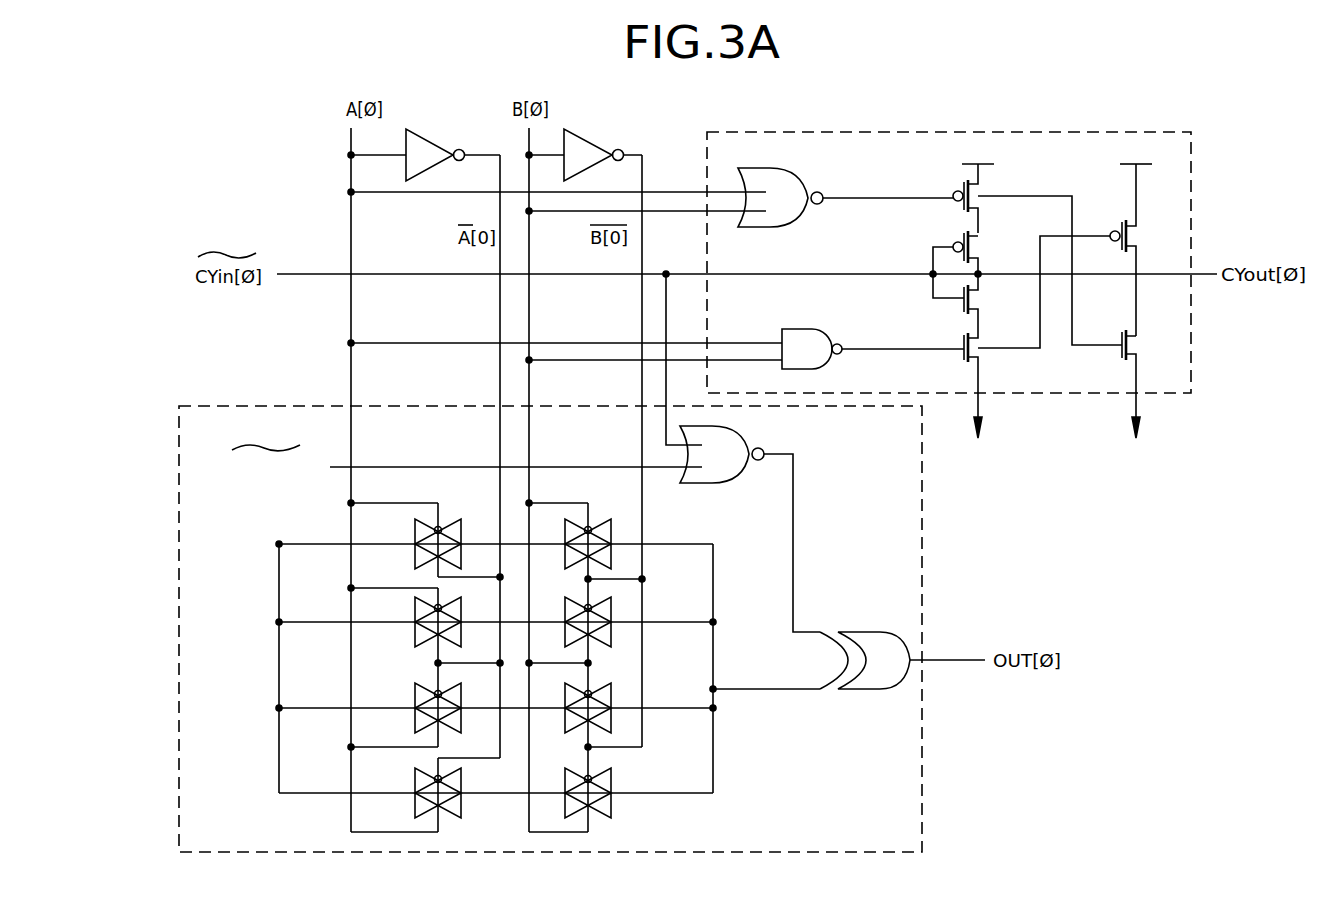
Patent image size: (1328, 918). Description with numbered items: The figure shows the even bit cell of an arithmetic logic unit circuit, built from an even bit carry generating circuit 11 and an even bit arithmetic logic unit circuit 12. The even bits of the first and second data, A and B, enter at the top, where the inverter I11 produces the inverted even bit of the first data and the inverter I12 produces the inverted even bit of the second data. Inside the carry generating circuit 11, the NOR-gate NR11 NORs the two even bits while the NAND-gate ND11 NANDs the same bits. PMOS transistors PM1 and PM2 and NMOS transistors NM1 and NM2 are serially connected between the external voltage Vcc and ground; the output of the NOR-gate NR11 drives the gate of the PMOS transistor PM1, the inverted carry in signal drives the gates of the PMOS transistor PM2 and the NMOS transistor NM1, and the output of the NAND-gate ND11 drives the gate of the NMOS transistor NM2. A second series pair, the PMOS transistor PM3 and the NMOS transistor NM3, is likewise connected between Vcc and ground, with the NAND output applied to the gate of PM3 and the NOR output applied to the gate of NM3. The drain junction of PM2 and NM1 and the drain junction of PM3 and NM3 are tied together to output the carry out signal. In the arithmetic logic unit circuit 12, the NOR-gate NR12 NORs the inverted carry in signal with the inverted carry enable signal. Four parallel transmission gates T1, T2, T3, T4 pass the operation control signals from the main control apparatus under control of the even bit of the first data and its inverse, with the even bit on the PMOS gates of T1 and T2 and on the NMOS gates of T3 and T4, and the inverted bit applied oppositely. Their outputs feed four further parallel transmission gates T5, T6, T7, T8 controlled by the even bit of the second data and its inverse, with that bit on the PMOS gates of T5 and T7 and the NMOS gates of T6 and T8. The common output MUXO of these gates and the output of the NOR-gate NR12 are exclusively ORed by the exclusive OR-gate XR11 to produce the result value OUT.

The even bit carry generating circuit 11 is at (900, 132).
The even bit arithmetic logic unit circuit 12 is at (922, 558).
The inverter I11 is at (425, 155).
The inverter I12 is at (585, 155).
The NOR-gate NR11 is at (780, 197).
The NOR-gate NR12 is at (722, 454).
The NAND-gate ND11 is at (812, 349).
The exclusive OR-gate XR11 is at (865, 660).
The PMOS transistor PM1 is at (983, 198).
The PMOS transistor PM2 is at (983, 252).
The PMOS transistor PM3 is at (1141, 250).
The NMOS transistor NM1 is at (990, 304).
The NMOS transistor NM2 is at (990, 385).
The NMOS transistor NM3 is at (1148, 384).
The transmission gate T1 is at (452, 535).
The transmission gate T2 is at (452, 625).
The transmission gate T3 is at (452, 705).
The transmission gate T4 is at (452, 784).
The transmission gate T5 is at (596, 531).
The transmission gate T6 is at (600, 621).
The transmission gate T7 is at (600, 705).
The transmission gate T8 is at (602, 789).